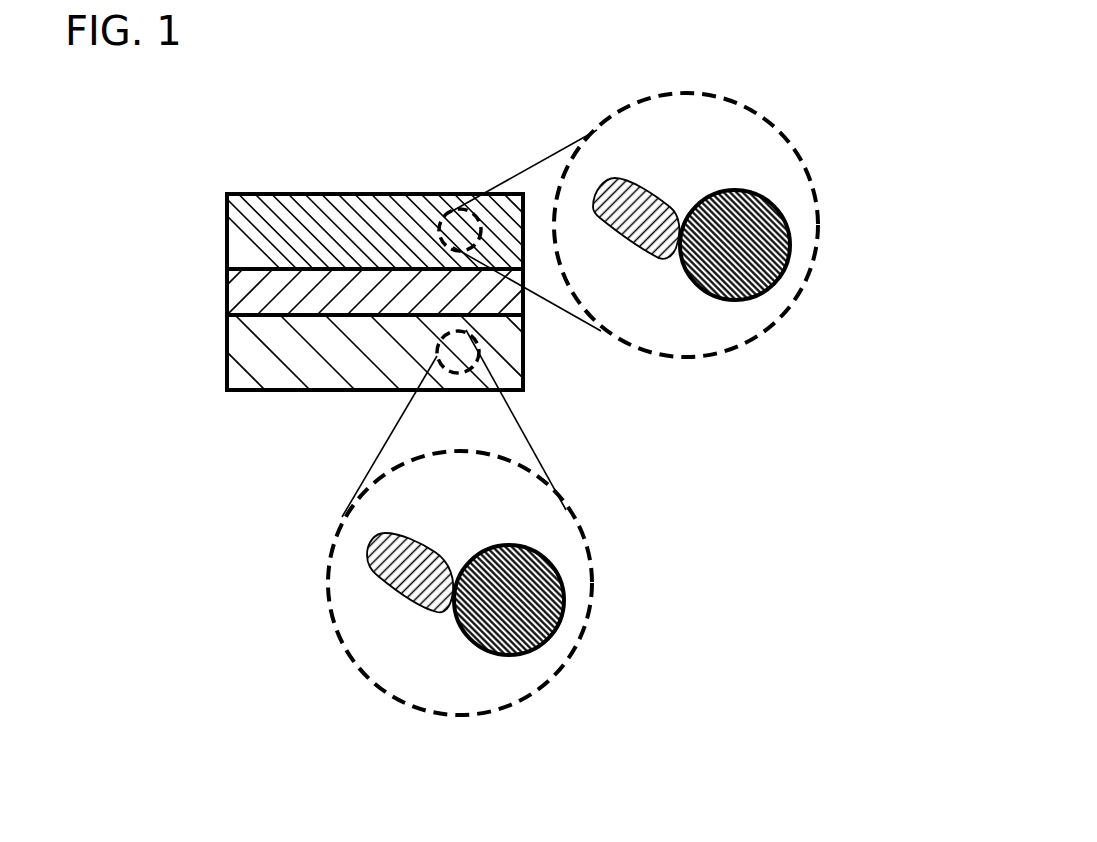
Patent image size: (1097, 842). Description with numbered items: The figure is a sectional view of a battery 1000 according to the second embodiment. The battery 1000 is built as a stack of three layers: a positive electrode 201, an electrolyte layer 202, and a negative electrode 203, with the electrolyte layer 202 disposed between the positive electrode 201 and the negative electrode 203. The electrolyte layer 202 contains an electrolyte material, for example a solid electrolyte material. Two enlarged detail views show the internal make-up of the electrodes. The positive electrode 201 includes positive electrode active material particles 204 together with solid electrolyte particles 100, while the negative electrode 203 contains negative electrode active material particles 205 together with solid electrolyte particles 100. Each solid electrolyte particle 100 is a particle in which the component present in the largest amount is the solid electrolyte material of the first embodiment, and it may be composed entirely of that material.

The battery 1000 is at (416, 139).
The positive electrode 201 is at (262, 215).
The electrolyte layer 202 is at (262, 290).
The negative electrode 203 is at (262, 353).
The positive electrode active material particles 204 is at (753, 247).
The negative electrode active material particles 205 is at (523, 592).
The solid electrolyte particle 100 is at (654, 240).